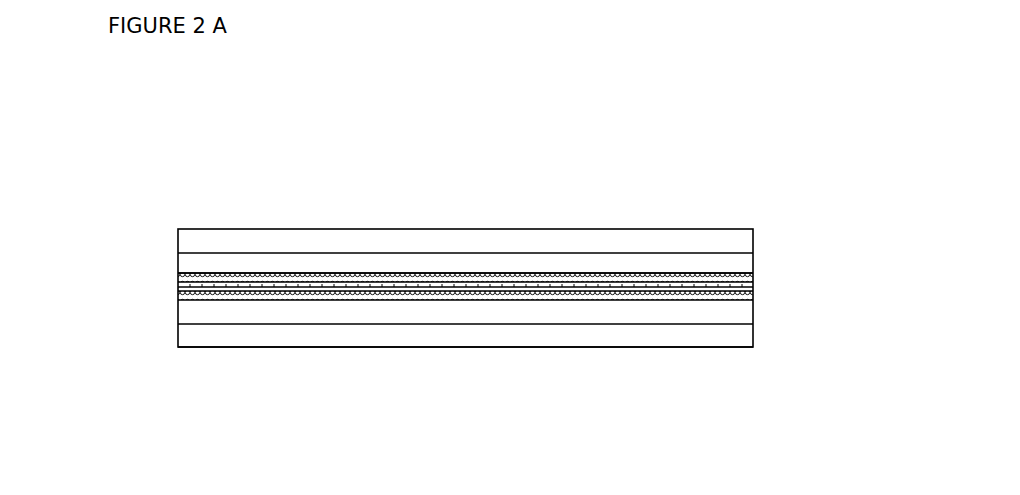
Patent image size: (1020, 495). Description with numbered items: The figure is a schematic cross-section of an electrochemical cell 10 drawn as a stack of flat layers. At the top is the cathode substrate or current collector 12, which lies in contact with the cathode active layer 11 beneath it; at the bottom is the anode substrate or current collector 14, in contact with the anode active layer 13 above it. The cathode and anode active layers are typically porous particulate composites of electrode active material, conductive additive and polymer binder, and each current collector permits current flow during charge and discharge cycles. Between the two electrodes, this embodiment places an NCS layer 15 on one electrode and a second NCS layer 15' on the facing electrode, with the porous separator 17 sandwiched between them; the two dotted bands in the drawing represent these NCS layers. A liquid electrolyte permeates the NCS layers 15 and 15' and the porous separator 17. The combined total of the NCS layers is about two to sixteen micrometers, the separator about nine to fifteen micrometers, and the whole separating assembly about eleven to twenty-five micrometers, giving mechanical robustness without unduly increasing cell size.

The electrochemical cell 10 is at (188, 179).
The cathode active layer 11 is at (753, 253).
The cathode substrate or current collector 12 is at (743, 232).
The anode active layer 13 is at (753, 324).
The anode substrate or current collector 14 is at (717, 348).
The NCS layer 15 is at (387, 321).
The NCS layer 15' is at (392, 257).
The porous separator 17 is at (753, 291).